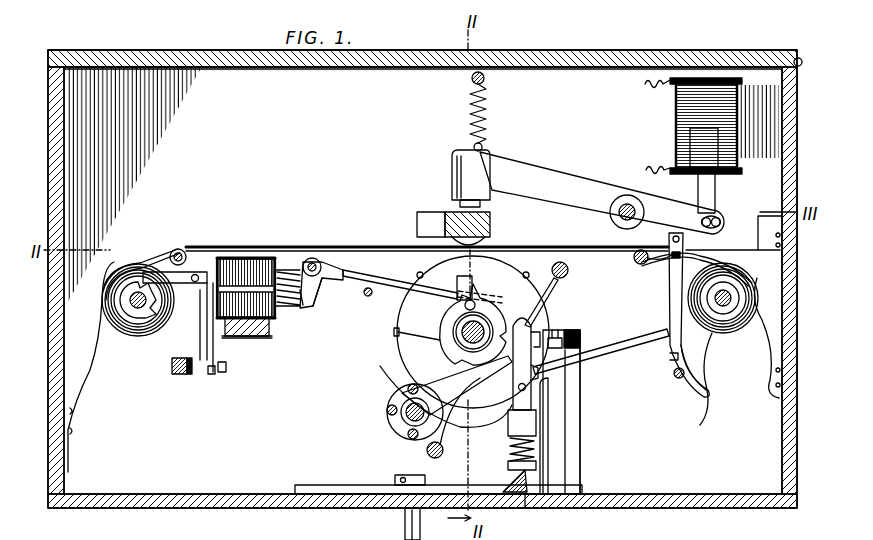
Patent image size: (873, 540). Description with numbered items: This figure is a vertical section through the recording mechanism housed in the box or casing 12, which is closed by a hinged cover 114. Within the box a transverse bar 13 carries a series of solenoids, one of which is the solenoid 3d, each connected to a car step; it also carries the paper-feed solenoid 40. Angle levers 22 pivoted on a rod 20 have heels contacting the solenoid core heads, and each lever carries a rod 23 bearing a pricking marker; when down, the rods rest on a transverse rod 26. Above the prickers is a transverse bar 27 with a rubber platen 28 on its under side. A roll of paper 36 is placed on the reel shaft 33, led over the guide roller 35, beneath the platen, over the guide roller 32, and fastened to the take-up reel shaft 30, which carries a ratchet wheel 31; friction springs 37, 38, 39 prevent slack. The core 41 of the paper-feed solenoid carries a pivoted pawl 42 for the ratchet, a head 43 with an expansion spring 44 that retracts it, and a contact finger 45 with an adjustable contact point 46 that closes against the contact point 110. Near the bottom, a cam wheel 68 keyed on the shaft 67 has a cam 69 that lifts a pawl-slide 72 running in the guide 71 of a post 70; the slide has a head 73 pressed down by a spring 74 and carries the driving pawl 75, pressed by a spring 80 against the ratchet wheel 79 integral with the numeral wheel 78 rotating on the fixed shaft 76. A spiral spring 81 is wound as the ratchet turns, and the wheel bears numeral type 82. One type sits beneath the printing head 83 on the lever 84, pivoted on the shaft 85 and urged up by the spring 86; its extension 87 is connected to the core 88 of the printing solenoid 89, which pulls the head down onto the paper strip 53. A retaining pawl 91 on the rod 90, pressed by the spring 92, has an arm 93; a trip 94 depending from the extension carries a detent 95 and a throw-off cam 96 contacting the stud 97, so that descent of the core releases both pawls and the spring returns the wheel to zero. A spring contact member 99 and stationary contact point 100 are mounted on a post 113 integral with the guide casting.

The box or casing 12 is at (166, 507).
The hinged cover 114 is at (615, 50).
The transverse bar 13 is at (262, 337).
The solenoid 3d is at (246, 338).
The rod 20 is at (312, 257).
The angle lever 22 is at (335, 282).
The rod 23 is at (381, 271).
The transverse rod 26 is at (364, 303).
The transverse bar 27 is at (437, 213).
The pad or platen 28 is at (487, 241).
The reel shaft 30 is at (133, 323).
The ratchet wheel 31 is at (140, 318).
The paper guide roller 32 is at (176, 249).
The reel shaft 33 is at (727, 305).
The paper guide roller 35 is at (638, 264).
The roll of paper 36 is at (714, 390).
The friction spring 37 is at (92, 368).
The friction spring 38 is at (735, 246).
The friction spring 39 is at (765, 345).
The paper-feed solenoid 40 is at (240, 258).
The core 41 is at (197, 271).
The pivoted pawl 42 is at (180, 288).
The head 43 is at (286, 268).
The expansion spring 44 is at (303, 272).
The contact finger 45 is at (214, 376).
The adjustable contact point 46 is at (180, 376).
The paper strip 53 is at (344, 246).
The shaft 67 is at (405, 529).
The cam wheel 68 is at (330, 485).
The cam 69 is at (526, 508).
The post 70 is at (556, 441).
The guide 71 is at (508, 424).
The pawl-slide 72 is at (530, 400).
The head 73 is at (508, 466).
The spring 74 is at (508, 446).
The driving pawl 75 is at (531, 350).
The shaft 76 is at (479, 324).
The numeral printing wheel 78 is at (448, 345).
The ratchet wheel 79 is at (500, 358).
The spring 80 is at (566, 278).
The spiral spring 81 is at (455, 333).
The numeral type 82 is at (394, 331).
The printing head 83 is at (452, 172).
The lever 84 is at (541, 170).
The shaft 85 is at (625, 204).
The spring 86 is at (487, 112).
The extension 87 is at (660, 212).
The core 88 is at (716, 190).
The solenoid 89 is at (676, 118).
The rod 90 is at (390, 432).
The retaining pawl 91 is at (538, 372).
The spring 92 is at (426, 455).
The pawl arm 93 is at (630, 348).
The trip 94 is at (671, 300).
The detent 95 is at (670, 355).
The throw-off cam 96 is at (700, 396).
The fixed rod or stud 97 is at (677, 379).
The spring contact member 99 is at (566, 330).
The stationary contact point 100 is at (556, 336).
The contact point 110 is at (189, 376).
The post 113 is at (581, 466).